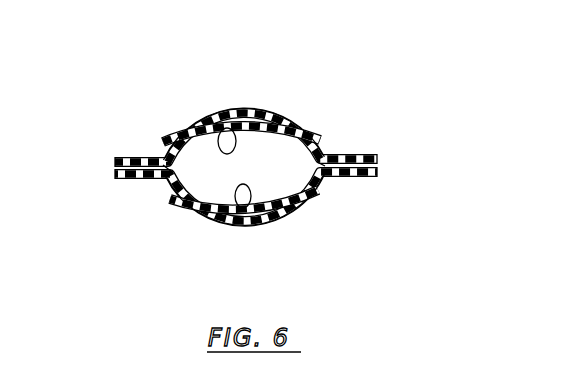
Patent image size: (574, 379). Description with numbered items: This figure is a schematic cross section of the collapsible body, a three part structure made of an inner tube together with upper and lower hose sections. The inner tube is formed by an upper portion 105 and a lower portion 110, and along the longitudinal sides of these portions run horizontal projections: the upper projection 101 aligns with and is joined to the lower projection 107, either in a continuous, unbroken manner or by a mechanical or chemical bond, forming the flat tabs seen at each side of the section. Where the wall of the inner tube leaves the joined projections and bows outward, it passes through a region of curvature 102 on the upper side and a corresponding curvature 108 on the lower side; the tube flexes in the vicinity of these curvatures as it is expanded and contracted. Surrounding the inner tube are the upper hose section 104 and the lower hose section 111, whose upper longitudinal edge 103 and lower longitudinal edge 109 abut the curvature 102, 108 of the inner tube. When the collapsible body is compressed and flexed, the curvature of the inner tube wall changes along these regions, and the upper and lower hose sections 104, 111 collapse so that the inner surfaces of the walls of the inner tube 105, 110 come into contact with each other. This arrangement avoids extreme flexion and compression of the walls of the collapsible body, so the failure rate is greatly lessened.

The upper projection 101 is at (118, 158).
The curvature 102 is at (322, 143).
The upper longitudinal edge 103 is at (165, 141).
The upper hose section 104 is at (277, 110).
The upper portion of inner tube 105 is at (219, 128).
The lower projection 107 is at (116, 180).
The curvature 108 is at (165, 179).
The lower longitudinal edge 109 is at (172, 201).
The lower portion of inner tube 110 is at (243, 208).
The lower hose section 111 is at (260, 228).